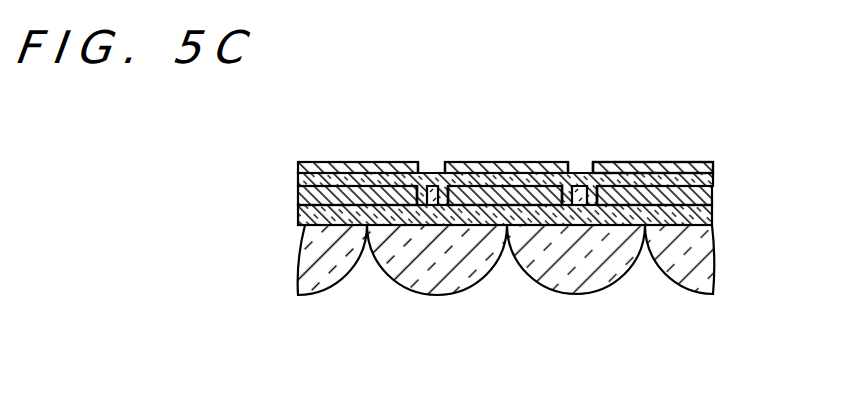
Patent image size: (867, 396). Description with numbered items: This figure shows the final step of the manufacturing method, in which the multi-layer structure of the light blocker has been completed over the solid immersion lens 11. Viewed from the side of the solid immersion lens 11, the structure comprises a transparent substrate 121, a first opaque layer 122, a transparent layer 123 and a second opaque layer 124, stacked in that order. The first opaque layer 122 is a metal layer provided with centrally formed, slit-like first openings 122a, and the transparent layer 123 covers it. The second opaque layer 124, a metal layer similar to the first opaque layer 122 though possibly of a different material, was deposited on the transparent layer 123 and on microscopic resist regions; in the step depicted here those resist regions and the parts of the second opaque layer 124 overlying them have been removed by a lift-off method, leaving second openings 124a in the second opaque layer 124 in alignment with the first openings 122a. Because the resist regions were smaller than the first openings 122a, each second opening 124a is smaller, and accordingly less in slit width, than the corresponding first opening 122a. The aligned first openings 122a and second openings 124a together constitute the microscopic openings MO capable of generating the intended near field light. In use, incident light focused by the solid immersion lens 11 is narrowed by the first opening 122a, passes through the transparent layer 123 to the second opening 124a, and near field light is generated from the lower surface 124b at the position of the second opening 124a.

The solid immersion lens 11 is at (710, 293).
The transparent substrate 121 is at (708, 215).
The first opaque layer 122 is at (713, 197).
The first opening 122a is at (428, 184).
The transparent layer 123 is at (713, 184).
The second opaque layer 124 is at (714, 169).
The second opening 124a is at (437, 173).
The lower surface 124b is at (708, 163).
The microscopic opening MO is at (552, 65).